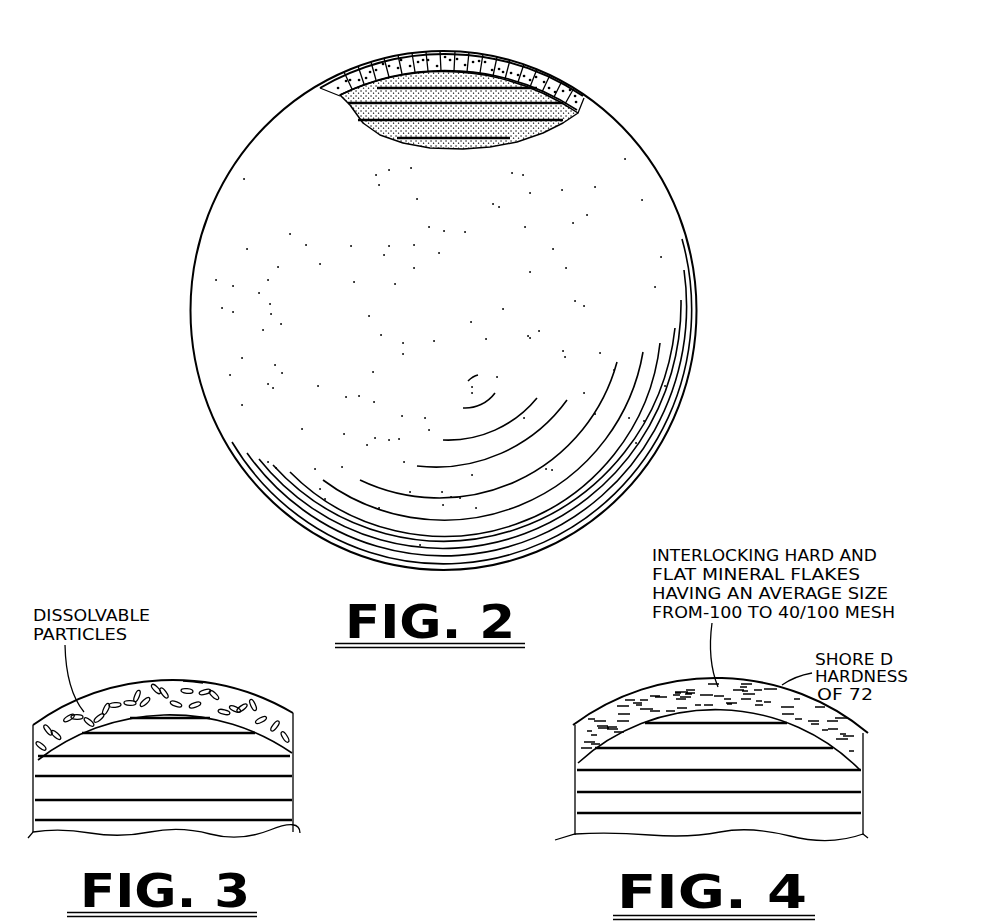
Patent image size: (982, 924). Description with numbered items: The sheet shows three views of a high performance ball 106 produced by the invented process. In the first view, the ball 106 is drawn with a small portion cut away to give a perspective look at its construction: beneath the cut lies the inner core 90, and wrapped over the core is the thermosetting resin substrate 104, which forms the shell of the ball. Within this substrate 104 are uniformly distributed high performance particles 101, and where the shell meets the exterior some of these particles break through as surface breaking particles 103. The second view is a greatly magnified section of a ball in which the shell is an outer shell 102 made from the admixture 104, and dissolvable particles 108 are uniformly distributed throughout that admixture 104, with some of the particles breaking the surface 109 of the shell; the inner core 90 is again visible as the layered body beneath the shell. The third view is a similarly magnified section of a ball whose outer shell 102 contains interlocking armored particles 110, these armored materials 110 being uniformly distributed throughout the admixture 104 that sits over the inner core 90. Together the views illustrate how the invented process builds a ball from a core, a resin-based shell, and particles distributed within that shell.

In FIG. 2, the inner core 90 is at (517, 90).
In FIG. 3, the inner core 90 is at (282, 793).
In FIG. 4, the inner core 90 is at (590, 806).
In FIG. 2, the high performance particles 101 is at (478, 66).
In FIG. 3, the outer shell 102 is at (305, 728).
In FIG. 4, the outer shell 102 is at (560, 752).
In FIG. 2, the surface breaking particles 103 is at (349, 68).
In FIG. 2, the thermosetting resin substrate 104 is at (400, 54).
In FIG. 3, the thermosetting resin substrate 104 is at (263, 707).
In FIG. 4, the thermosetting resin substrate 104 is at (678, 687).
In FIG. 2, the high performance ball 106 is at (655, 121).
In FIG. 3, the dissolvable particles 108 is at (98, 705).
In FIG. 3, the surface breaking dissolvable particles 109 is at (193, 683).
In FIG. 4, the interlocking armored particles 110 is at (741, 683).